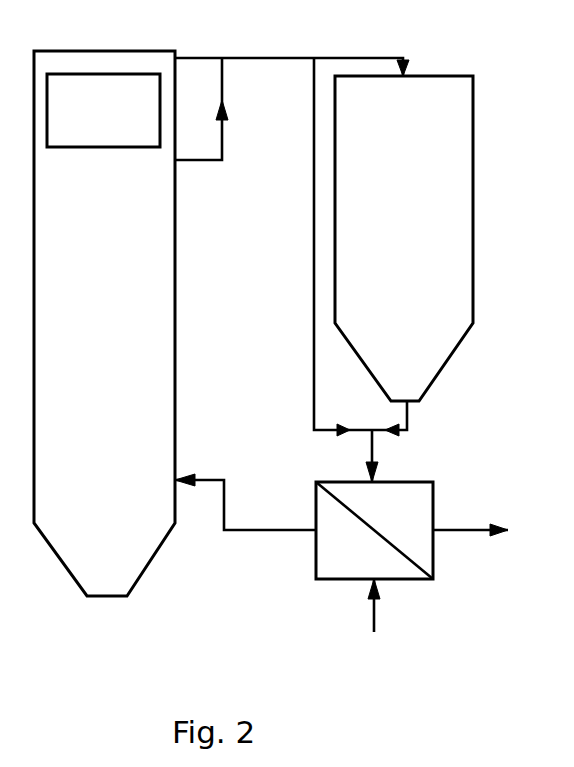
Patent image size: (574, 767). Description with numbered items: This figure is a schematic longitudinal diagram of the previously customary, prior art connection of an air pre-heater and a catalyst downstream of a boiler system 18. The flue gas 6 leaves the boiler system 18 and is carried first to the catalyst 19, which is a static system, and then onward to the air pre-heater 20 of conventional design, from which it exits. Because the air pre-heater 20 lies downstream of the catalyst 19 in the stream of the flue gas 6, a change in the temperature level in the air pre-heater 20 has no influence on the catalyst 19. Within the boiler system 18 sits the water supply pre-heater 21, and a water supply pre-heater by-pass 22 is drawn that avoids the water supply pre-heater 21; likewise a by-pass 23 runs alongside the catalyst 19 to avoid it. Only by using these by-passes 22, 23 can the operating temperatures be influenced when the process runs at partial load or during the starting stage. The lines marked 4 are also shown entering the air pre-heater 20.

The boiler system 18 is at (114, 322).
The water supply pre-heater 21 is at (113, 126).
The water supply pre-heater by-pass 22 is at (203, 162).
The by-pass 23 is at (314, 263).
The catalyst 19 is at (416, 235).
The air pre-heater 20 is at (334, 564).
The flue gas 6 is at (254, 58).
The feed / recirculation line 4 is at (258, 530).